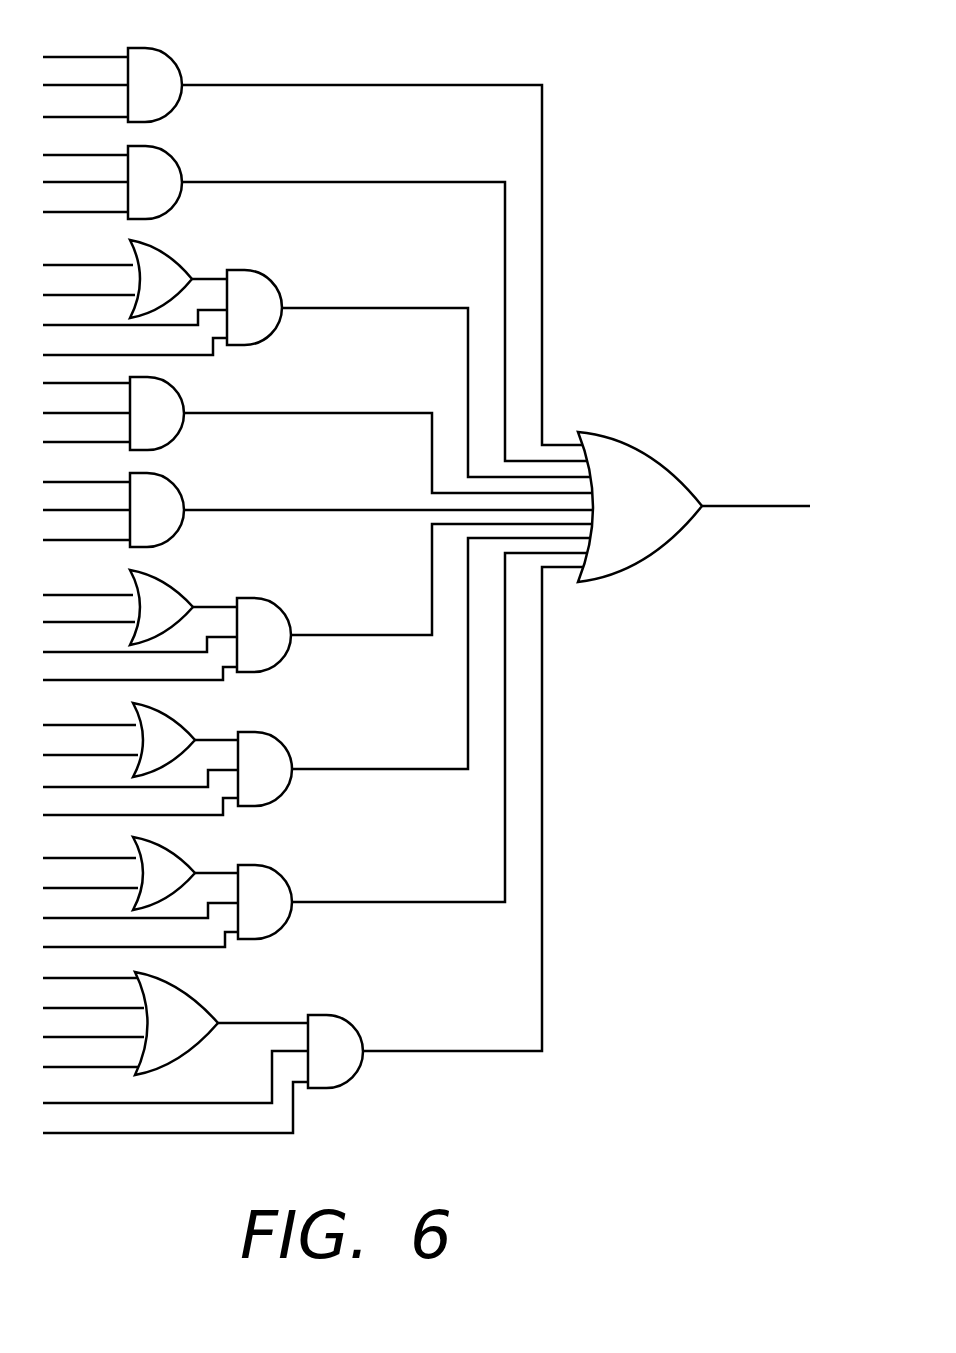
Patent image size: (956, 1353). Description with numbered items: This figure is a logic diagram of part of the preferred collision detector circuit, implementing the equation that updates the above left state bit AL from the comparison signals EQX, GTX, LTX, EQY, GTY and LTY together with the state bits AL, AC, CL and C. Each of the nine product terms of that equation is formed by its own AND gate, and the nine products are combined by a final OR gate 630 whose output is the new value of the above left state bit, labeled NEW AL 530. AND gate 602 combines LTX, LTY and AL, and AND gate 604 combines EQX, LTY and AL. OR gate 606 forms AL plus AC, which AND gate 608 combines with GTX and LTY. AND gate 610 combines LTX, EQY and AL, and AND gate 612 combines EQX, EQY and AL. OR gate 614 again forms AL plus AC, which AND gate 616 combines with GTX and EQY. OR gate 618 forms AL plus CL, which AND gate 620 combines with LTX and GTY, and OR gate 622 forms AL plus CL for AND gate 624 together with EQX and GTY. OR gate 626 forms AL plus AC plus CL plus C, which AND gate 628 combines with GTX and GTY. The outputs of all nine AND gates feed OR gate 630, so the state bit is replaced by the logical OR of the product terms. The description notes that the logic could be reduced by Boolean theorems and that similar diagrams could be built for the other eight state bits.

The AND gate 602 is at (173, 52).
The AND gate 604 is at (175, 152).
The OR gate 606 is at (170, 250).
The AND gate 608 is at (275, 282).
The AND gate 610 is at (187, 393).
The AND gate 612 is at (182, 483).
The OR gate 614 is at (177, 580).
The AND gate 616 is at (310, 583).
The OR gate 618 is at (190, 723).
The AND gate 620 is at (289, 745).
The OR gate 622 is at (190, 857).
The AND gate 624 is at (282, 864).
The OR gate 626 is at (210, 997).
The AND gate 628 is at (383, 1000).
The OR gate 630 is at (640, 452).
The NEW AL output signal line 530 is at (732, 507).